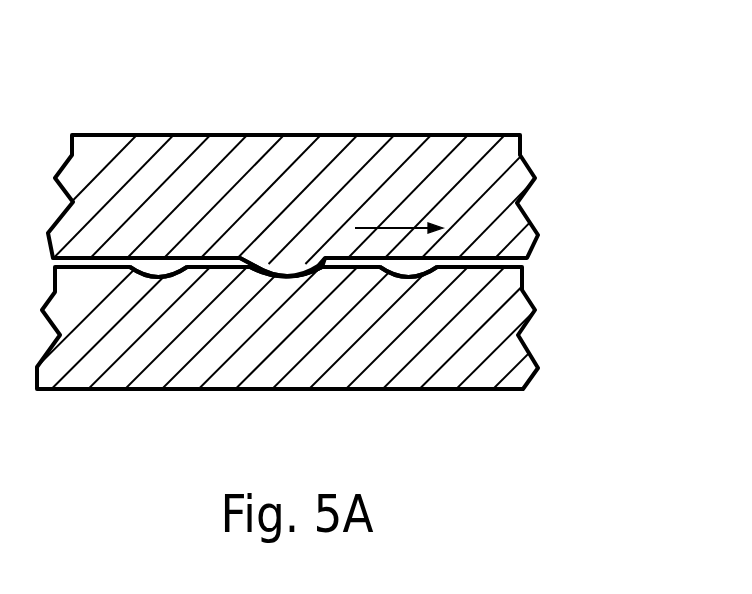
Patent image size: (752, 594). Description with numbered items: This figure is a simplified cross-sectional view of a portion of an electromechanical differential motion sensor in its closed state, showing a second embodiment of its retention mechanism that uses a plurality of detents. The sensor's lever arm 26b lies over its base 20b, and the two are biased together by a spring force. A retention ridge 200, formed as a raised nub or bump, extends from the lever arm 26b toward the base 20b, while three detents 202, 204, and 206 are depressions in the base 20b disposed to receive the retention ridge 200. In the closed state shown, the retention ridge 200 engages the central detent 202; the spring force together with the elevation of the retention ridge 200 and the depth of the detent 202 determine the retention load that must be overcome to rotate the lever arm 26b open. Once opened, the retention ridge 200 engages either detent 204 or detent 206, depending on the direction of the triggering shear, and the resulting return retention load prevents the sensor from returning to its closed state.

The lever arm 26b is at (447, 171).
The base 20b is at (447, 338).
The retention ridge 200 is at (292, 273).
The detent 202 is at (298, 274).
The detent 204 is at (160, 277).
The detent 206 is at (408, 277).